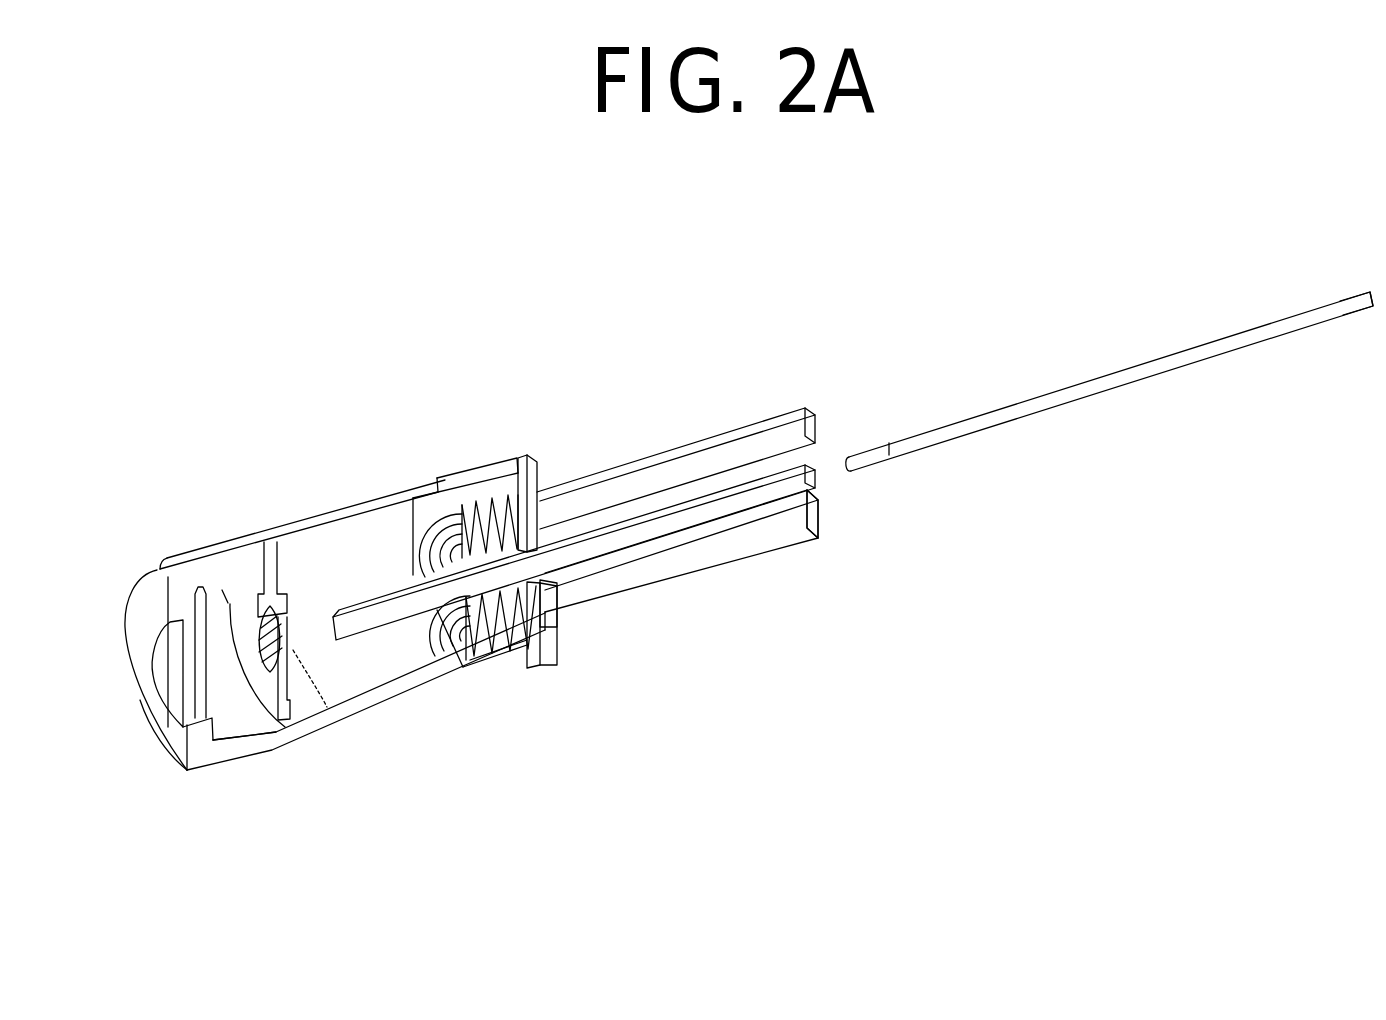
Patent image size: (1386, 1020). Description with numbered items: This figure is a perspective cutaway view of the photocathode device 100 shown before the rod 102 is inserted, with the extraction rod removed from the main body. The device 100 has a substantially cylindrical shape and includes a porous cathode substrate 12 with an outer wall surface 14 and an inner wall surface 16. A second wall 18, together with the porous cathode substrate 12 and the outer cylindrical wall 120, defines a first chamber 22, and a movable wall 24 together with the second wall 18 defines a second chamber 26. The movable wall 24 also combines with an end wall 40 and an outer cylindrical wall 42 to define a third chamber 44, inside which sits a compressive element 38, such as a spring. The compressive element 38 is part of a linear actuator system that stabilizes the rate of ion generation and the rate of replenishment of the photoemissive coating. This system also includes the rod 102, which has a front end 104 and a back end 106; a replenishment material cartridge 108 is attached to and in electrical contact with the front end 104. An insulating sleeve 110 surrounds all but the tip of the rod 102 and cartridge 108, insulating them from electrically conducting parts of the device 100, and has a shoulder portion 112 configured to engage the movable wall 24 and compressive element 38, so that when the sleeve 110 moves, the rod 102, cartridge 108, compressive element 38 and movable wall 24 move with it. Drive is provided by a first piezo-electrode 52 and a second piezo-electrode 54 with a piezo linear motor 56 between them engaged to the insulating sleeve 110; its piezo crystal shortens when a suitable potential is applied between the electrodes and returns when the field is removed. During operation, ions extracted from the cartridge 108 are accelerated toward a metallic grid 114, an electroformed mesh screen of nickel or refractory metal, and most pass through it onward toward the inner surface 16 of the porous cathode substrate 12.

The photocathode device 100 is at (179, 302).
The porous cathode substrate 12 is at (172, 722).
The outer wall surface 14 is at (158, 655).
The inner wall surface 16 is at (198, 590).
The second wall 18 is at (272, 595).
The first chamber 22 is at (228, 728).
The movable wall 24 is at (398, 490).
The second chamber 26 is at (350, 568).
The compressive element 38 is at (470, 497).
The end wall 40 is at (533, 487).
The outer cylindrical wall 42 is at (520, 652).
The third chamber 44 is at (502, 652).
The first piezo-electrode 52 is at (562, 627).
The second piezo-electrode 54 is at (826, 522).
The piezo linear motor 56 is at (603, 497).
The rod 102 is at (1118, 365).
The front end 104 is at (890, 448).
The back end 106 is at (1331, 312).
The replenishment material cartridge 108 is at (866, 448).
The insulating sleeve 110 is at (688, 493).
The shoulder portion 112 is at (495, 652).
The metallic grid 114 is at (290, 652).
The outer cylindrical wall 120 is at (222, 590).